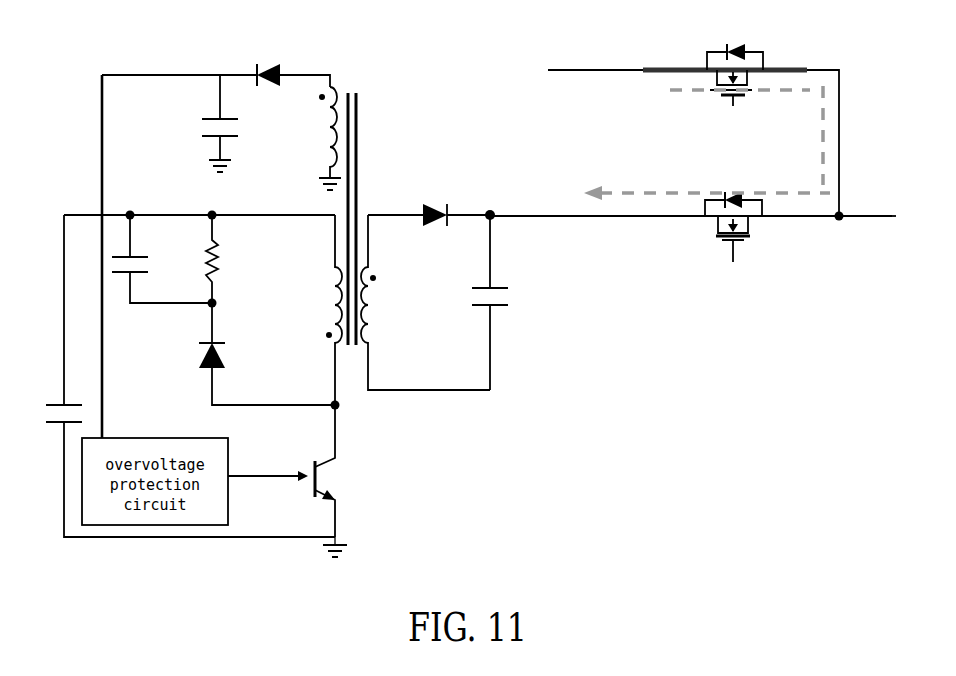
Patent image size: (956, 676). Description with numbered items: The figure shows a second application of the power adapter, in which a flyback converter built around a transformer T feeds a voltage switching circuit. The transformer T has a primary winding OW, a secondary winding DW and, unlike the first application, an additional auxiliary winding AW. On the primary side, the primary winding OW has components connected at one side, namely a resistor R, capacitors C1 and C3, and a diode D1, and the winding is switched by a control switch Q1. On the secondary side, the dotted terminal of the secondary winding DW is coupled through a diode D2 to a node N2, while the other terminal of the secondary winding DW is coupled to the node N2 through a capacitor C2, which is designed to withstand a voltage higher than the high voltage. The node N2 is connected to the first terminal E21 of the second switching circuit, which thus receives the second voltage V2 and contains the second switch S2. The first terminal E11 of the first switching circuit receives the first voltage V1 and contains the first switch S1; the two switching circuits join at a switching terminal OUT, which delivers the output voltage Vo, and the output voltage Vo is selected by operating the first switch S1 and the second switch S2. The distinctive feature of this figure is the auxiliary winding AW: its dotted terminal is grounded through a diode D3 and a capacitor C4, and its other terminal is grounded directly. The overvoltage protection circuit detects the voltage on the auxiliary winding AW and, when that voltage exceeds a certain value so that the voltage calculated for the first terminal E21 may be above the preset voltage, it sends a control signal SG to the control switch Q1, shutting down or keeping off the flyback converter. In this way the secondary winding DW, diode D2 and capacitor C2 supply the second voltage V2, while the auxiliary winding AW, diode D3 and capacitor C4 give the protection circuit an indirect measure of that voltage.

The diode D3 is at (271, 60).
The capacitor C4 is at (202, 123).
The auxiliary winding AW is at (313, 138).
The transformer T is at (355, 204).
The capacitor C1 is at (162, 259).
The resistor R is at (225, 259).
The diode D1 is at (267, 354).
The primary winding OW is at (316, 310).
The secondary winding DW is at (425, 302).
The diode D2 is at (429, 233).
The node N2 is at (486, 204).
The capacitor C2 is at (472, 302).
The capacitor C3 is at (46, 418).
The control signal SG is at (268, 468).
The control switch Q1 is at (342, 481).
The first voltage V1 is at (555, 57).
The first terminal of the first switching circuit E11 is at (712, 59).
The first switch S1 is at (735, 61).
The second voltage V2 is at (597, 190).
The first terminal of the second switching circuit E21 is at (746, 236).
The second switch S2 is at (733, 216).
The switching terminal OUT is at (859, 209).
The output voltage Vo is at (909, 222).